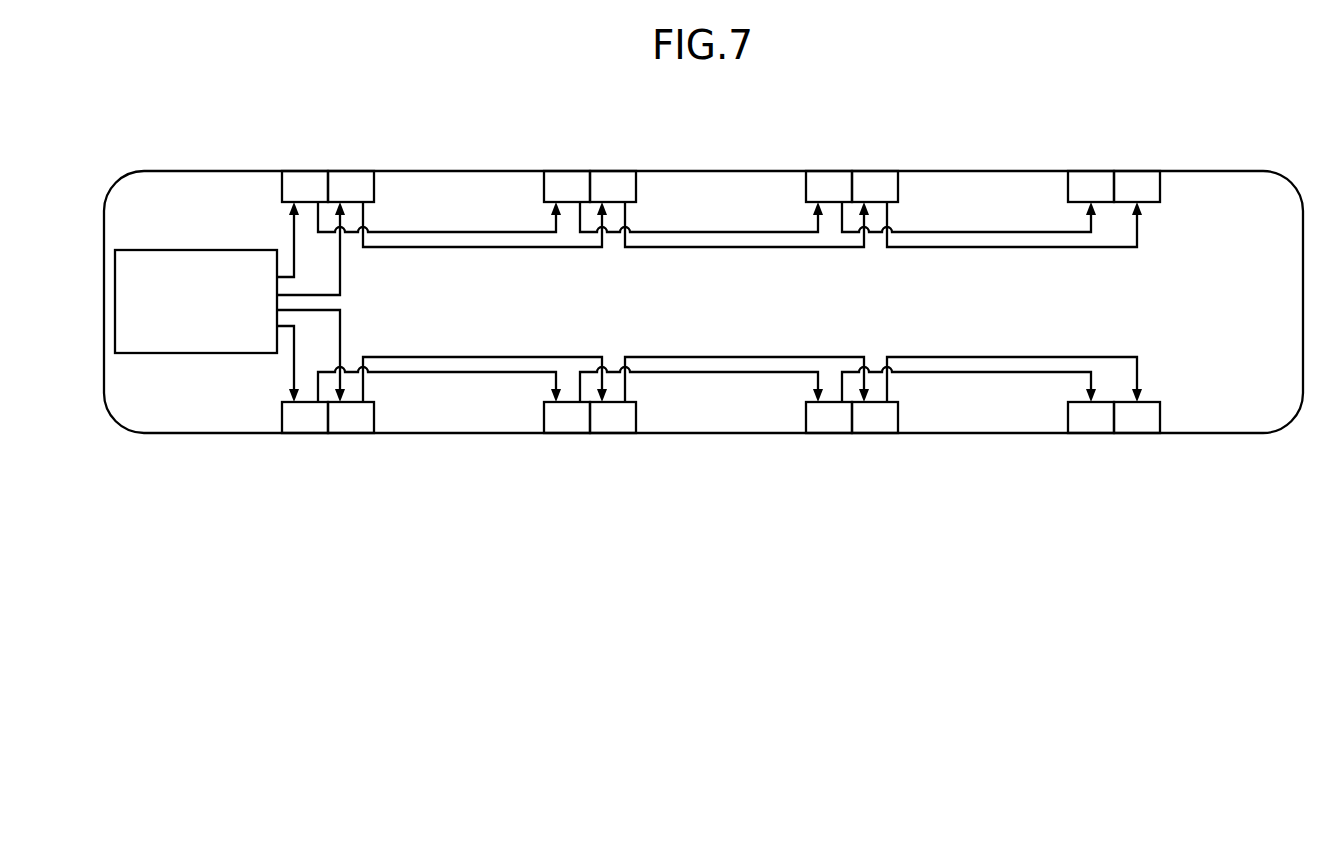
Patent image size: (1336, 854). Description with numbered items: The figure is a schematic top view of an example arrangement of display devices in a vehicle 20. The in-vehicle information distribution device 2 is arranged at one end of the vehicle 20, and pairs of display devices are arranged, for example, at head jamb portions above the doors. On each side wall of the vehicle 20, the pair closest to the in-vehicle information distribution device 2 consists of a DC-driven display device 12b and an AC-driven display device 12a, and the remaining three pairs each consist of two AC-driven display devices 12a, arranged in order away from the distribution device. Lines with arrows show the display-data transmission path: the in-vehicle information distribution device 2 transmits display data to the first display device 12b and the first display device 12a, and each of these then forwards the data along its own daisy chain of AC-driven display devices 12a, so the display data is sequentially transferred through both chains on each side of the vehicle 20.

The in-vehicle information distribution device 2 is at (221, 250).
The vehicle 20 is at (1225, 183).
The display device (AC-drive) 12a is at (353, 171).
The display device (DC-drive) 12b is at (302, 171).